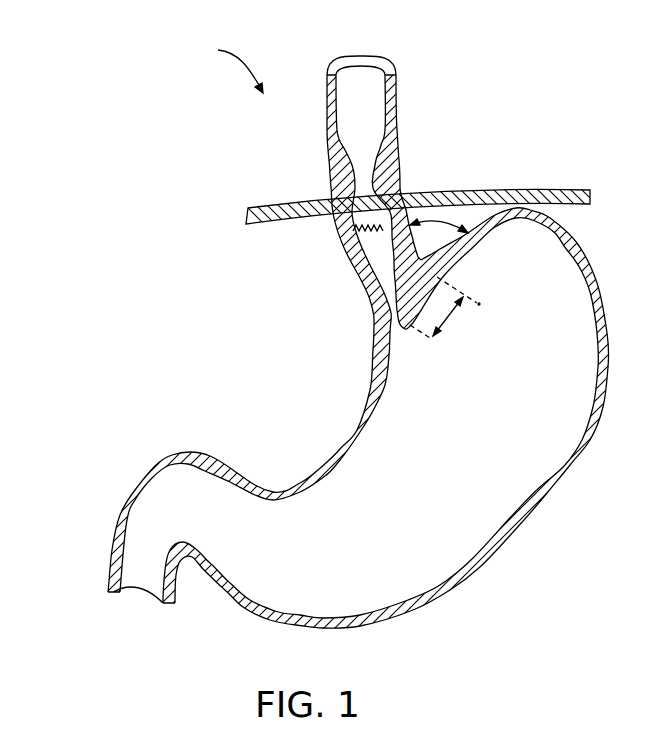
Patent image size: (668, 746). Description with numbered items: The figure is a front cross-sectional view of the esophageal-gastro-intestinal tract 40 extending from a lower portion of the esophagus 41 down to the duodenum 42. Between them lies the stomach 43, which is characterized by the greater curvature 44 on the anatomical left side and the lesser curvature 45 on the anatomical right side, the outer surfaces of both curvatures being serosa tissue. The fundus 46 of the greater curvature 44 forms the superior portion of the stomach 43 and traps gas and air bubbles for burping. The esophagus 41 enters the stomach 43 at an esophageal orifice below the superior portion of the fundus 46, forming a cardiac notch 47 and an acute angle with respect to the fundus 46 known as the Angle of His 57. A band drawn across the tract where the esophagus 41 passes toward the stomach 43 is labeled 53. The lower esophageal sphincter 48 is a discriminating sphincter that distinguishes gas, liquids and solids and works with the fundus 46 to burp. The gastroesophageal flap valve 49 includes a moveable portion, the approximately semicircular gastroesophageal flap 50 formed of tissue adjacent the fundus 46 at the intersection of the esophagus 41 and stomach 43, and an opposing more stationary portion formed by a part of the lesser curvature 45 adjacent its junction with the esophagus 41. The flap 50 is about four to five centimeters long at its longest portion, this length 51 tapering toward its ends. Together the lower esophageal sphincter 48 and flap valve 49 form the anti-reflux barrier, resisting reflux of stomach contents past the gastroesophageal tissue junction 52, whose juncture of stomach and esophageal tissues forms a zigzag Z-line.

The esophageal-gastro-intestinal tract 40 is at (225, 67).
The esophagus 41 is at (373, 95).
The duodenum 42 is at (192, 472).
The stomach 43 is at (410, 529).
The greater curvature 44 is at (458, 581).
The lesser curvature 45 is at (368, 397).
The fundus 46 is at (527, 205).
The cardiac notch 47 is at (438, 257).
The lower esophageal sphincter 48 is at (331, 168).
The gastroesophageal flap valve 49 is at (373, 302).
The gastroesophageal flap 50 is at (408, 330).
The flap length 51 is at (443, 320).
The gastroesophageal tissue junction 52 is at (354, 236).
The diaphragm 53 is at (247, 213).
The Angle of His 57 is at (441, 220).